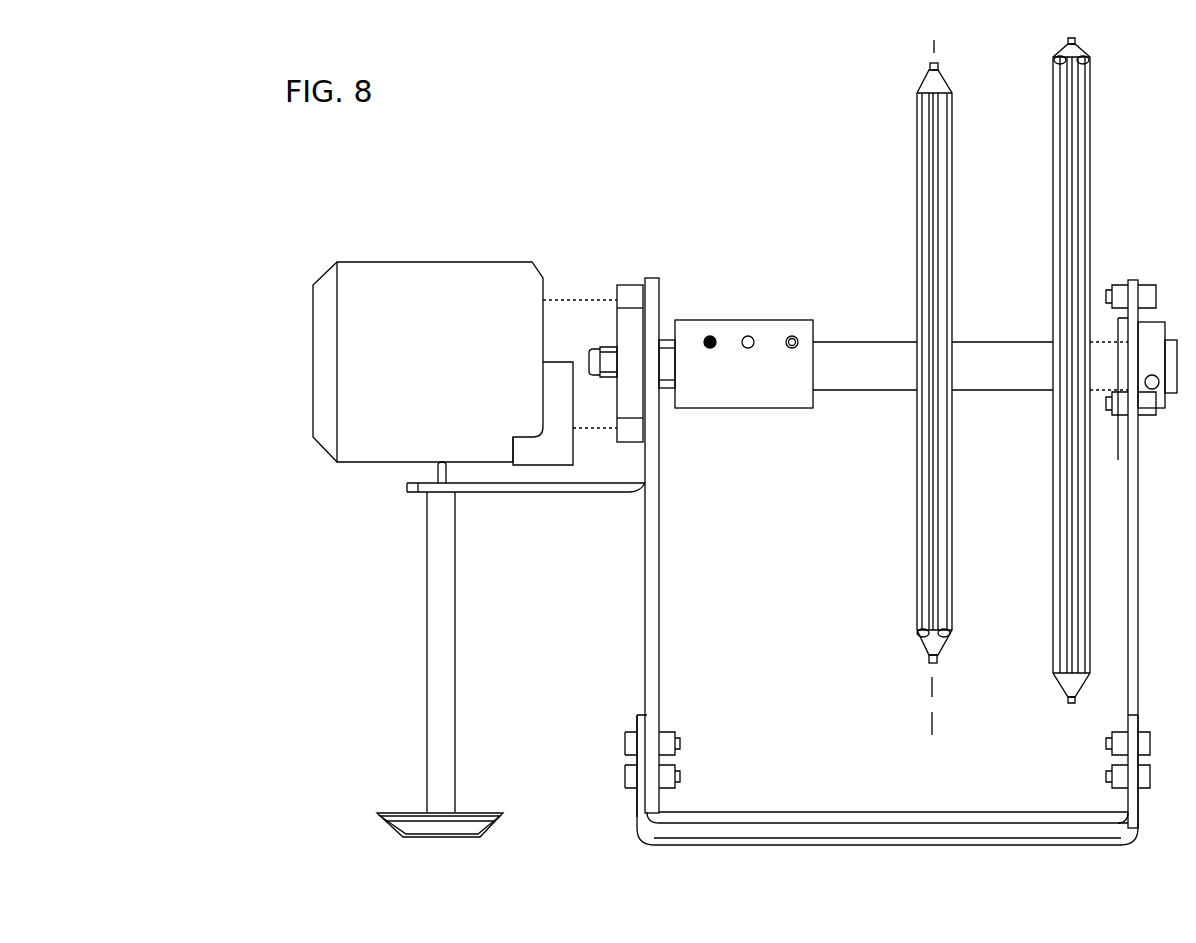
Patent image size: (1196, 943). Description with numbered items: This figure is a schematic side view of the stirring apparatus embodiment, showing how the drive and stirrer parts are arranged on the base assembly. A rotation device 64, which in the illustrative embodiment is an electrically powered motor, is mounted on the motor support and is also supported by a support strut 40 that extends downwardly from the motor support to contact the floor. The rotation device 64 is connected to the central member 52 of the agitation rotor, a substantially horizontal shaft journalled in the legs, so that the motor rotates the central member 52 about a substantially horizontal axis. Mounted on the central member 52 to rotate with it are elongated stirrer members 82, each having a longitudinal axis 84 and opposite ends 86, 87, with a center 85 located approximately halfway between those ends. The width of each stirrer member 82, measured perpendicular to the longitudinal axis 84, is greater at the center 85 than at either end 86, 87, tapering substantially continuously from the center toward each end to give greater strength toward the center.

The support strut 40 is at (455, 660).
The central member 52 is at (841, 342).
The rotation device 64 is at (437, 245).
The stirrer member 82 is at (952, 243).
The longitudinal axis 84 is at (930, 685).
The center 85 is at (908, 398).
The end 86 is at (938, 74).
The end 87 is at (937, 662).